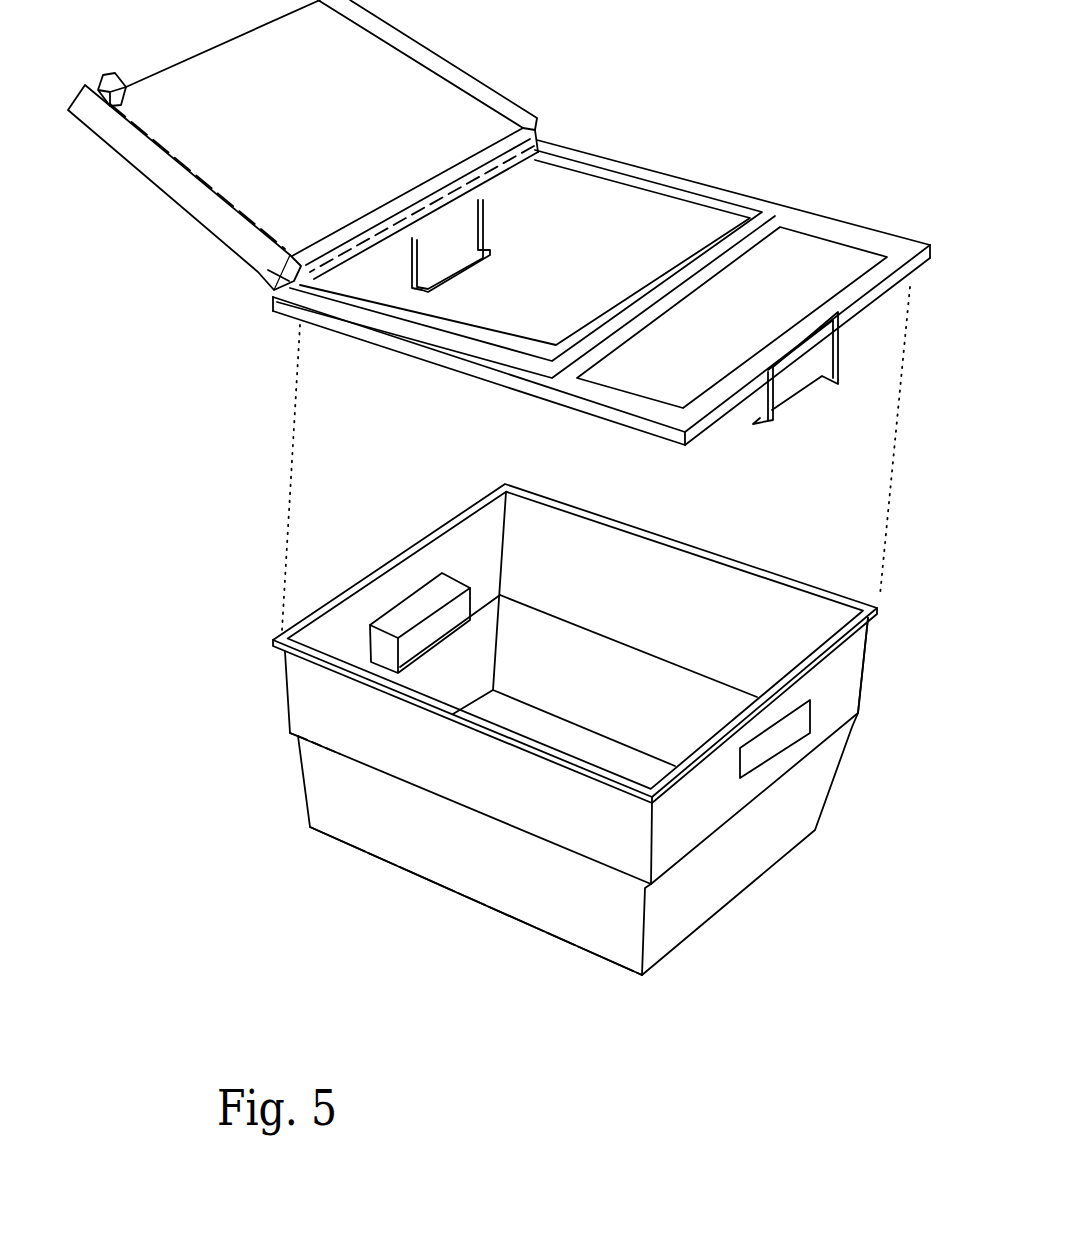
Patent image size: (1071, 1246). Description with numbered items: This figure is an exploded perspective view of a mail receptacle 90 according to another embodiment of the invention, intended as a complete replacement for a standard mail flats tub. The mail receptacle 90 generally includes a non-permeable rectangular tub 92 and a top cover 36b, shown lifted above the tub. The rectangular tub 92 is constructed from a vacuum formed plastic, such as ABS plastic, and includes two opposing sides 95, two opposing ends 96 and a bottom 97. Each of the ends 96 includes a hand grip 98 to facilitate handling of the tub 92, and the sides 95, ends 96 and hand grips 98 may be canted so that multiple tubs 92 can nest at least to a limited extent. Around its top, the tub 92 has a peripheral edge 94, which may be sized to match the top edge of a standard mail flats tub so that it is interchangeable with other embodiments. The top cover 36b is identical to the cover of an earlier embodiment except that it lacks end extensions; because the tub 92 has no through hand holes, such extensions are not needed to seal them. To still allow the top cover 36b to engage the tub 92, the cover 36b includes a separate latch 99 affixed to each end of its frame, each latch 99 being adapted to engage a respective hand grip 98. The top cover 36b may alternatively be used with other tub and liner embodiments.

The top cover 36b is at (804, 210).
The mail receptacle 90 is at (146, 413).
The rectangular tub 92 is at (296, 805).
The peripheral edge 94 is at (683, 545).
The sides 95 is at (553, 537).
The ends 96 is at (474, 550).
The bottom 97 is at (530, 717).
The hand grip 98 is at (417, 612).
The latch 99 is at (477, 265).